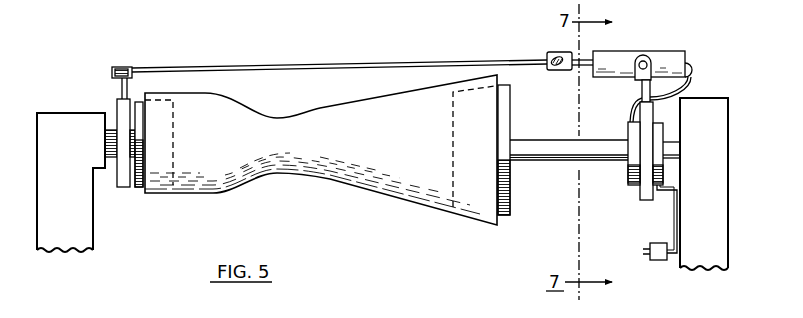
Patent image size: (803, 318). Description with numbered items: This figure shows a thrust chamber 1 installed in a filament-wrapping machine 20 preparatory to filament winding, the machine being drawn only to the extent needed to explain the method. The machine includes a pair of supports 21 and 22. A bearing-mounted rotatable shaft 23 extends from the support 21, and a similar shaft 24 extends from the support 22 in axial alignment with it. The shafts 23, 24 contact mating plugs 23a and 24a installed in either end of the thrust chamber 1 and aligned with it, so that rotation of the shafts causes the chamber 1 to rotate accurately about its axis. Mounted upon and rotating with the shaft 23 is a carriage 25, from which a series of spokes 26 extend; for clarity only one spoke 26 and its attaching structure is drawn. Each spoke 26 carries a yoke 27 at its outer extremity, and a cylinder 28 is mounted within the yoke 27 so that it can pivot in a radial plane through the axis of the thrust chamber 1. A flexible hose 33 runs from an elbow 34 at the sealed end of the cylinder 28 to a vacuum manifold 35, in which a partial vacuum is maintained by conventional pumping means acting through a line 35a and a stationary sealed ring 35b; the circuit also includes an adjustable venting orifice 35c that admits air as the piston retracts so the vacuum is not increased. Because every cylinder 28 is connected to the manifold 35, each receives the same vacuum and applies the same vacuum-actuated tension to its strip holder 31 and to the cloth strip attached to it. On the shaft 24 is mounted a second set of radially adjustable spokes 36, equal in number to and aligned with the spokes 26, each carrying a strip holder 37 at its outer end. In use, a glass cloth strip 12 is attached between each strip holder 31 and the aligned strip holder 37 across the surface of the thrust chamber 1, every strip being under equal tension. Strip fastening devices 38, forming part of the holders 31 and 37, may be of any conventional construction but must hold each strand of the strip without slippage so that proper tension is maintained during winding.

The thrust chamber 1 is at (350, 140).
The glass cloth strip 12 is at (258, 62).
The filament-wrapping machine 20 is at (57, 88).
The support 21 is at (714, 225).
The support 22 is at (72, 225).
The shaft 23 is at (549, 158).
The mating plug 23a is at (511, 202).
The shaft 24 is at (107, 138).
The mating plug 24a is at (138, 189).
The carriage 25 is at (645, 190).
The spoke 26 is at (639, 84).
The yoke 27 is at (648, 57).
The cylinder 28 is at (602, 58).
The strip holder 31 is at (563, 66).
The flexible hose 33 is at (697, 78).
The elbow 34 is at (694, 63).
The vacuum manifold 35 is at (631, 170).
The line 35a is at (675, 212).
The sealed ring 35b is at (663, 142).
The adjustable venting orifice 35c is at (658, 261).
The radially adjustable spoke 36 is at (121, 97).
The strip holder 37 is at (130, 68).
The strip fastening device 38 is at (553, 54).